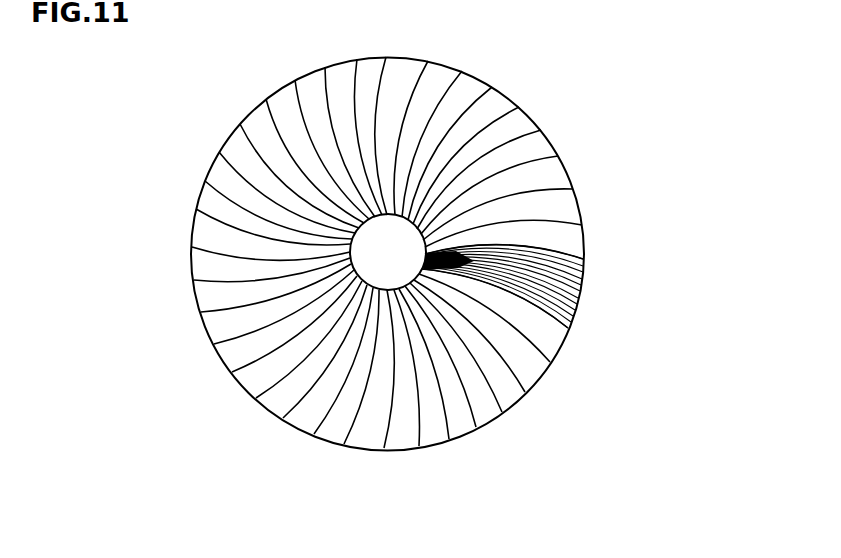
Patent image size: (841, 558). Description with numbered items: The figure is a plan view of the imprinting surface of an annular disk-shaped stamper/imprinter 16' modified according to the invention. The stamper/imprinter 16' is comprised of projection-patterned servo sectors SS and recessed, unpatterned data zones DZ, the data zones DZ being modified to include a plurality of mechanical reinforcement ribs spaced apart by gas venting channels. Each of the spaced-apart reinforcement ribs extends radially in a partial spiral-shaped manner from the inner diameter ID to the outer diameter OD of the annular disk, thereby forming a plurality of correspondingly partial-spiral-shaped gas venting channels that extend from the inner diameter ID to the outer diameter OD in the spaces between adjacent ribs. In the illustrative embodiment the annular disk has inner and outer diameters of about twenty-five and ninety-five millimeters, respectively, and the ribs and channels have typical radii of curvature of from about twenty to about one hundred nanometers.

The stamper/imprinter 16' is at (476, 251).
The outer diameter OD is at (527, 393).
The inner diameter ID is at (362, 280).
The servo sectors SS is at (589, 303).
The data zones DZ is at (650, 294).